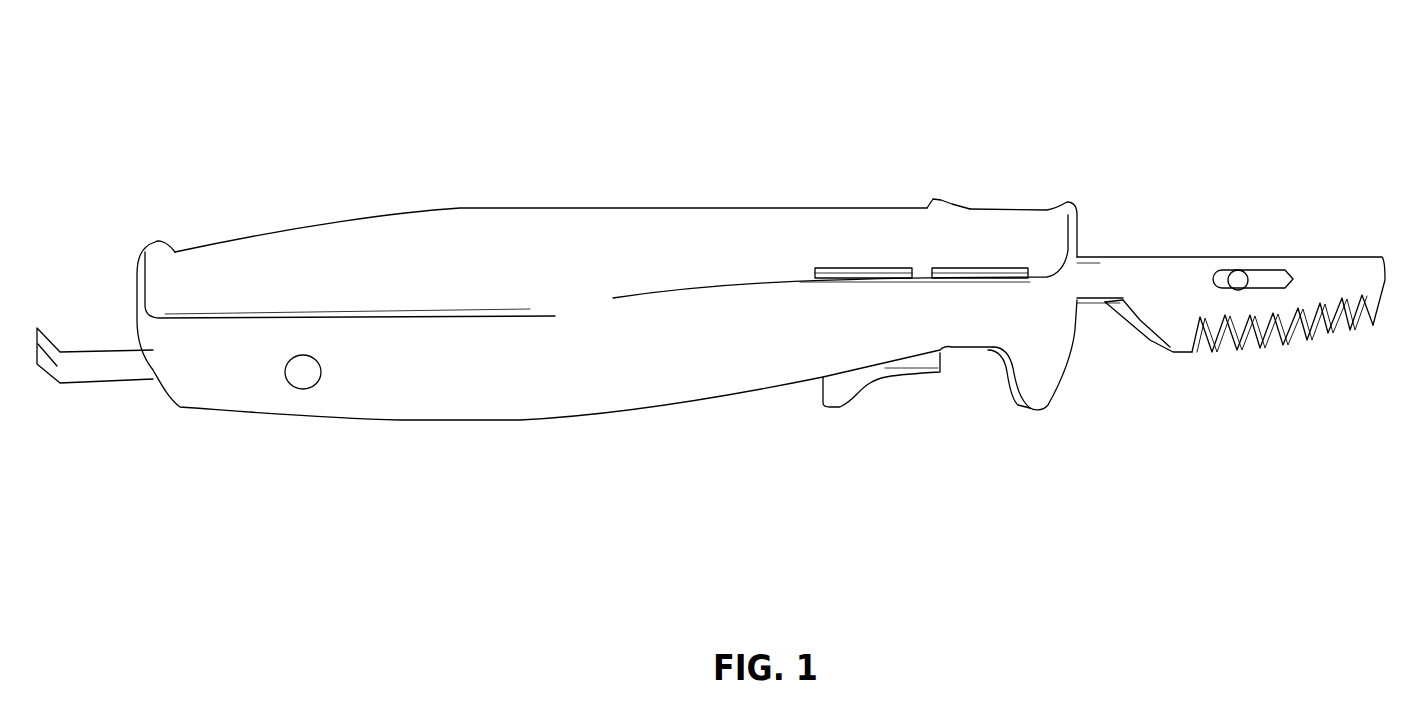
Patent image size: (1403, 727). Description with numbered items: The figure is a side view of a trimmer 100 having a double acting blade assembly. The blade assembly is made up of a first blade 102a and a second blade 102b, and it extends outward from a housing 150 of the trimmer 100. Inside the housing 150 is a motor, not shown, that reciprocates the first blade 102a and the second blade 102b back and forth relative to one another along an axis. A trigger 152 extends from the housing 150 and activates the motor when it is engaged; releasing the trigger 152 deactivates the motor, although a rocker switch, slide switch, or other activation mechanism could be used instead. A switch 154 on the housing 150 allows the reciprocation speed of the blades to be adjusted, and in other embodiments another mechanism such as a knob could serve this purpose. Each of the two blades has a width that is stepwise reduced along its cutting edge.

The trimmer 100 is at (711, 290).
The housing 150 is at (655, 372).
The trigger 152 is at (882, 373).
The switch 154 is at (938, 203).
The first blade 102a is at (1167, 277).
The second blade 102b is at (1130, 330).